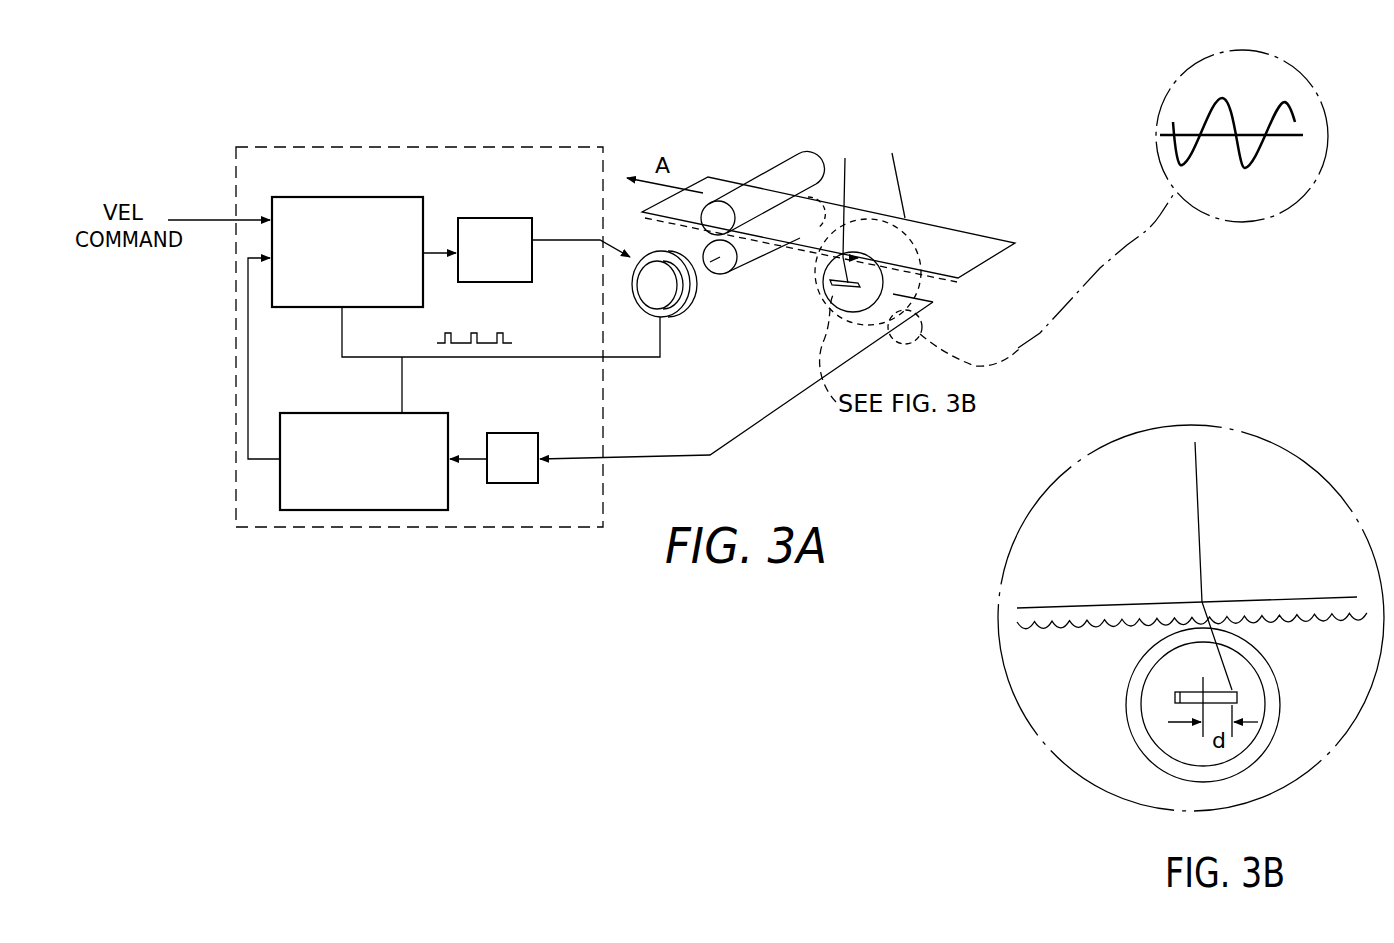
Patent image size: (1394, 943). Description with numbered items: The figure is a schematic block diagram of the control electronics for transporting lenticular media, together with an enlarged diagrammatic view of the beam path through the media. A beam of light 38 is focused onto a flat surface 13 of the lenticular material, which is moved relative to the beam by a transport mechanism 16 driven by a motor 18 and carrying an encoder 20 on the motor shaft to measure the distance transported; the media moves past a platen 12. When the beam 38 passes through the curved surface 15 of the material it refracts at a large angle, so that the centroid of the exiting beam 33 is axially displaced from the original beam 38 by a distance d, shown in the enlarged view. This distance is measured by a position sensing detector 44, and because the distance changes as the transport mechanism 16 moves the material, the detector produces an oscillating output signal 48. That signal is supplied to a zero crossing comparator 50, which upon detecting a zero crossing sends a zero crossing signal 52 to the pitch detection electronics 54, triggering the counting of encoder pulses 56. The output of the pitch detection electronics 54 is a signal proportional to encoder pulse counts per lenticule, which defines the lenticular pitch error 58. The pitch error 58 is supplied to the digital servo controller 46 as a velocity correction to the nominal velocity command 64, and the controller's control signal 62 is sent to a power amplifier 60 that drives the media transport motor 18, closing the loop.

In FIG. 3B, the platen 12 is at (1280, 700).
In FIG. 3A, the flat surface 13 is at (957, 237).
In FIG. 3B, the flat surface 13 is at (1287, 598).
In FIG. 3A, the curved surface 15 is at (970, 275).
In FIG. 3B, the curved surface 15 is at (1322, 622).
In FIG. 3A, the transport mechanism 16 is at (772, 177).
In FIG. 3A, the motor 18 is at (697, 303).
In FIG. 3A, the encoder 20 is at (663, 297).
In FIG. 3A, the exiting beam 33 is at (820, 272).
In FIG. 3B, the exiting beam 33 is at (1217, 660).
In FIG. 3A, the beam of light 38 is at (864, 178).
In FIG. 3B, the beam of light 38 is at (1200, 520).
In FIG. 3A, the position sensing detector 44 is at (830, 300).
In FIG. 3B, the position sensing detector 44 is at (1175, 698).
In FIG. 3A, the digital servo controller 46 is at (345, 197).
In FIG. 3A, the output signal 48 is at (1280, 153).
In FIG. 3A, the zero crossing comparator 50 is at (530, 484).
In FIG. 3A, the zero crossing signal 52 is at (475, 462).
In FIG. 3A, the pitch detection electronics 54 is at (392, 510).
In FIG. 3A, the encoder pulses 56 is at (487, 368).
In FIG. 3A, the lenticular pitch error 58 is at (270, 459).
In FIG. 3A, the power amplifier 60 is at (515, 218).
In FIG. 3A, the control signal 62 is at (428, 250).
In FIG. 3A, the nominal velocity command 64 is at (197, 218).